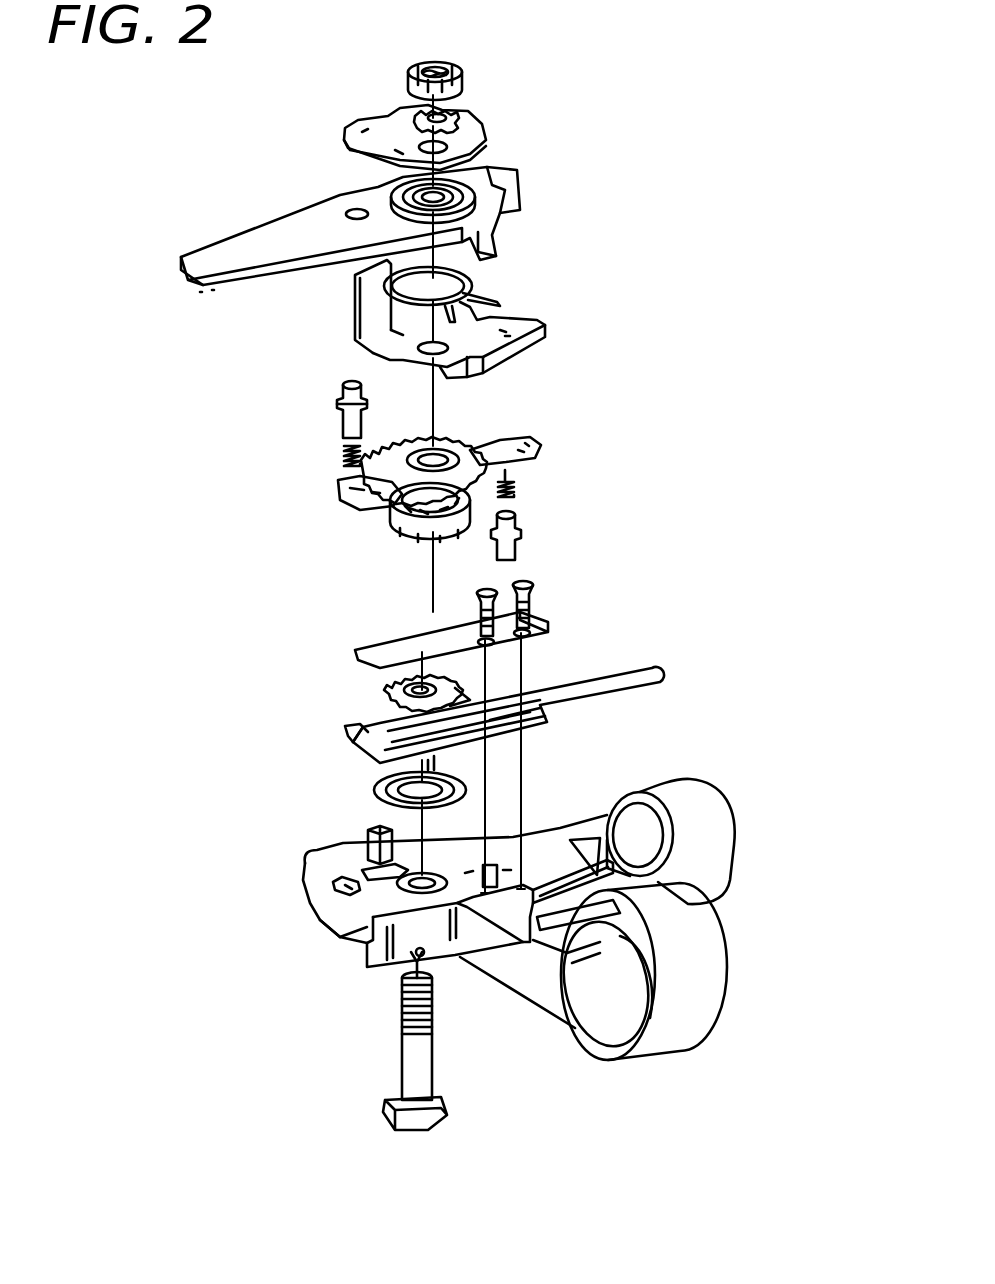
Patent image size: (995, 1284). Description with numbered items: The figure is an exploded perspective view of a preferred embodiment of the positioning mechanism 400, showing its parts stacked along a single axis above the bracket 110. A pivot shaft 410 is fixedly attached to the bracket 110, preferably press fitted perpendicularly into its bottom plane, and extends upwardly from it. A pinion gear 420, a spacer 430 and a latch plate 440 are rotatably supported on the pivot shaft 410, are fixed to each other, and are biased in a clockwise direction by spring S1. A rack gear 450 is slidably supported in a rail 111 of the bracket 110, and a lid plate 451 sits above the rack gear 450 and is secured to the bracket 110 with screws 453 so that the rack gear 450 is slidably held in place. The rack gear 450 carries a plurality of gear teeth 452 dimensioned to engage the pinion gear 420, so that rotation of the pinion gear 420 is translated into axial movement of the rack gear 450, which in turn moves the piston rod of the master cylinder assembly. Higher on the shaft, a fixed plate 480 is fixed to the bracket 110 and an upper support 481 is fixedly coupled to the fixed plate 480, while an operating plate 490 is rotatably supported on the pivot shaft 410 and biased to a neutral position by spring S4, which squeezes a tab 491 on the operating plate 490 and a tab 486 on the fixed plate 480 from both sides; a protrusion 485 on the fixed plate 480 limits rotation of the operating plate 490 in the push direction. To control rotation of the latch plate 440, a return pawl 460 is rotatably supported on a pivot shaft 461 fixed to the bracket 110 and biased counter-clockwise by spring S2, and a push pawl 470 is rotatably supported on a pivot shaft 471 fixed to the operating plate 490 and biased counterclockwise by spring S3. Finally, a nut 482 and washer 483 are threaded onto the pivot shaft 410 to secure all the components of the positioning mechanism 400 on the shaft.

The positioning mechanism 400 is at (762, 302).
The bracket 110 is at (546, 840).
The rail 111 is at (343, 944).
The pivot shaft 410 is at (425, 1068).
The pinion gear 420 is at (384, 690).
The spacer 430 is at (393, 533).
The latch plate 440 is at (468, 446).
The rack gear 450 is at (535, 726).
The lid plate 451 is at (415, 645).
The gear teeth 452 is at (345, 727).
The screws 453 is at (535, 590).
The return pawl 460 is at (543, 450).
The pivot shaft 461 is at (522, 550).
The push pawl 470 is at (348, 504).
The pivot shaft 471 is at (348, 378).
The fixed plate 480 is at (497, 362).
The upper support 481 is at (480, 146).
The nut 482 is at (460, 80).
The washer 483 is at (452, 114).
The protrusion 485 is at (355, 300).
The tab 486 is at (472, 382).
The operating plate 490 is at (378, 229).
The tab 491 is at (494, 244).
The spring S1 is at (430, 806).
The spring S2 is at (516, 492).
The spring S3 is at (344, 444).
The spring S4 is at (497, 300).